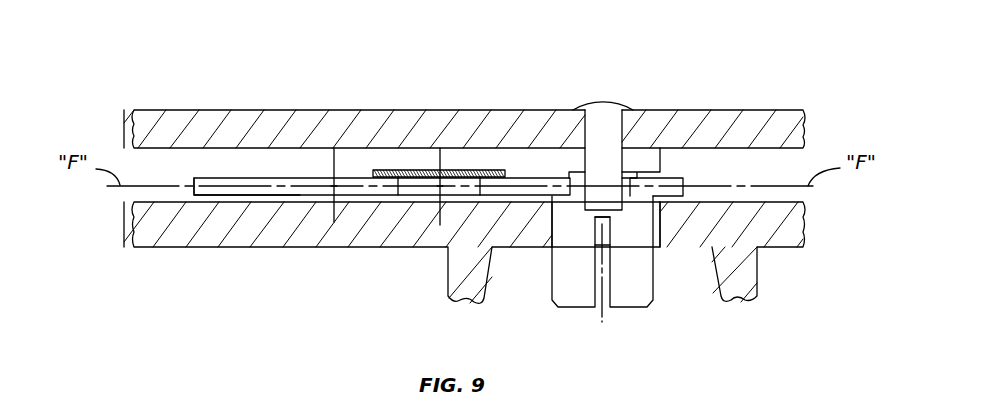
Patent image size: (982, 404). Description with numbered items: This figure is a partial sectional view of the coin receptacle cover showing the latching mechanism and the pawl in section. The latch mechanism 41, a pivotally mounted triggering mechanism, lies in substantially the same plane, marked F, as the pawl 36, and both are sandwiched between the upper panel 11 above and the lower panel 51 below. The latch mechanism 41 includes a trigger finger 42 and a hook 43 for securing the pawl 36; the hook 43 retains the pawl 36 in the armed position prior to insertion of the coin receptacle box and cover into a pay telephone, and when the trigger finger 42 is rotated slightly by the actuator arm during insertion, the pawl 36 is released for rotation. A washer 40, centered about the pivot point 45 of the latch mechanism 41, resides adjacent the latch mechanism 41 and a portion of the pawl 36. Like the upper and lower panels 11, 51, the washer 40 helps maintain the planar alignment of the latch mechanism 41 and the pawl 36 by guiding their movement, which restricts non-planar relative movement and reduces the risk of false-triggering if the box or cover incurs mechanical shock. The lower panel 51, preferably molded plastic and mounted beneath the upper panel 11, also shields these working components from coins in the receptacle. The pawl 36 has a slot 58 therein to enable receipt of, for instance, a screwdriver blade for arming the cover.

The upper panel 11 is at (205, 125).
The pawl 36 is at (545, 176).
The washer 40 is at (390, 171).
The latch mechanism 41 is at (265, 180).
The trigger finger 42 is at (238, 190).
The hook 43 is at (392, 193).
The pivot point 45 is at (440, 210).
The lower panel 51 is at (273, 230).
The slot 58 is at (603, 290).